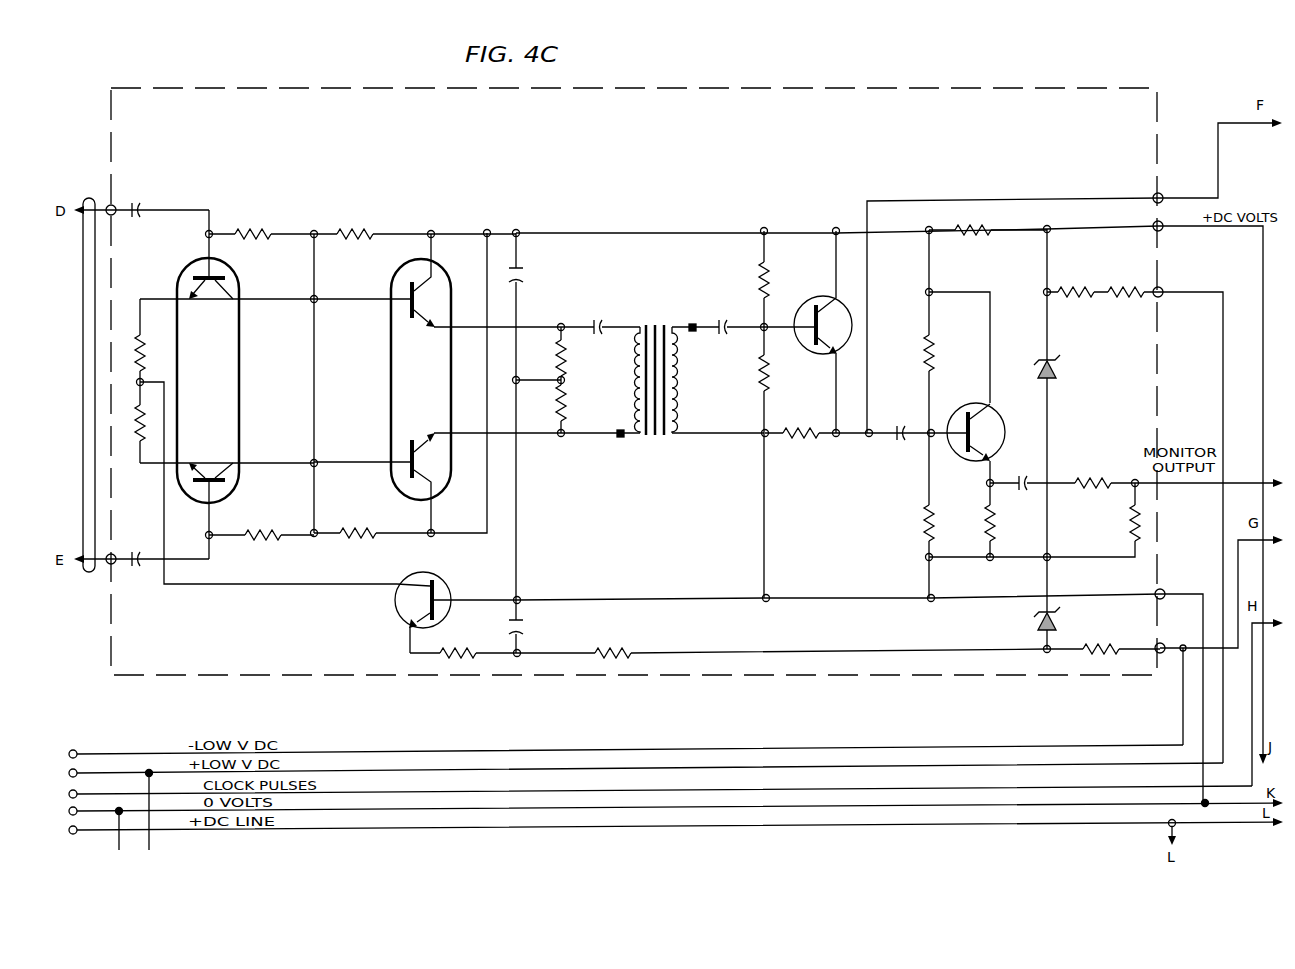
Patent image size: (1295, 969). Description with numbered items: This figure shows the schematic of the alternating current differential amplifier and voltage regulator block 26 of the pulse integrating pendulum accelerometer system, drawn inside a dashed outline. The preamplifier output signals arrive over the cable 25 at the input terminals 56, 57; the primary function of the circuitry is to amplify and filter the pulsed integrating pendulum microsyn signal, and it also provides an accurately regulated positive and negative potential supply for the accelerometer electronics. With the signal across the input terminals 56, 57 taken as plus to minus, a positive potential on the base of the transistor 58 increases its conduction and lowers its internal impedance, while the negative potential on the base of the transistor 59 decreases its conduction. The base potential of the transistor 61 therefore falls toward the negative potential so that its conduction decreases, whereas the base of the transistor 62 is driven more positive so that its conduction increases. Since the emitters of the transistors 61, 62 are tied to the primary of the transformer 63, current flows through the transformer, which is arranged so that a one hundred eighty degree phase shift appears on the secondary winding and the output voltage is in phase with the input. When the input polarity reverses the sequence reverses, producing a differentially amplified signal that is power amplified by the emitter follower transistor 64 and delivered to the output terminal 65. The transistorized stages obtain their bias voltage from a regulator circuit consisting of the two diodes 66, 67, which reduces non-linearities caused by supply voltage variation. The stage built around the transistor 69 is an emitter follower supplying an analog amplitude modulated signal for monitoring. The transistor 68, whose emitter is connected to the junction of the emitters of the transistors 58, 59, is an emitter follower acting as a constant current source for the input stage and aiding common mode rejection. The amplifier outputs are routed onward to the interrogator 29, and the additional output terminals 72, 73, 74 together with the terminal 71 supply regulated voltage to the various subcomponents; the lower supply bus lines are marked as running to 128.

The cable 25 is at (83, 377).
The alternating current differential amplifier and voltage regulator block 26 is at (607, 86).
The interrogator 29 is at (1254, 681).
The input terminal 56 is at (114, 205).
The input terminal 57 is at (114, 565).
The transistor 58 is at (199, 271).
The transistor 59 is at (198, 497).
The transistor 61 is at (402, 282).
The transistor 62 is at (407, 487).
The transformer 63 is at (656, 320).
The emitter follower transistor 64 is at (807, 310).
The output terminal 65 is at (1162, 194).
The diode 66 is at (1057, 366).
The diode 67 is at (1060, 622).
The transistor 68 is at (398, 603).
The transistor 69 is at (972, 405).
The DC volts terminal 71 is at (1163, 232).
The output terminal 72 is at (1165, 289).
The output terminal 73 is at (1166, 591).
The output terminal 74 is at (1160, 655).
The power supply connection 128 is at (151, 838).